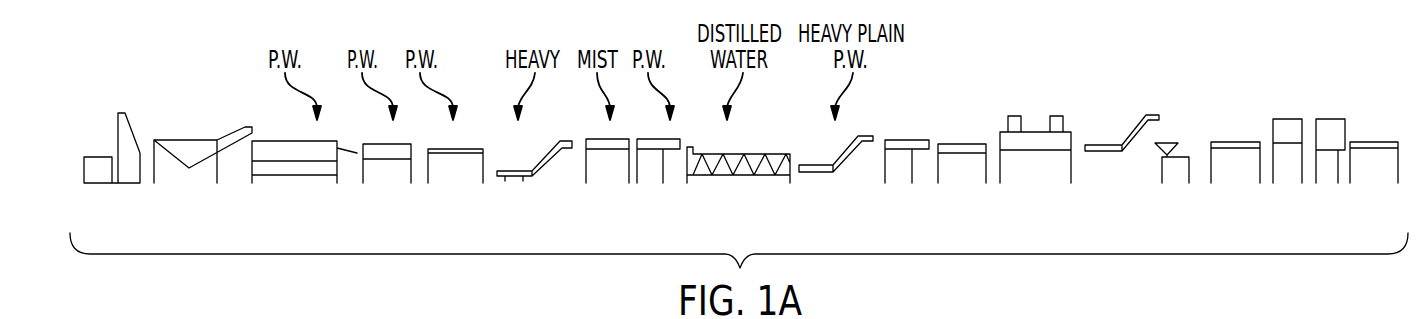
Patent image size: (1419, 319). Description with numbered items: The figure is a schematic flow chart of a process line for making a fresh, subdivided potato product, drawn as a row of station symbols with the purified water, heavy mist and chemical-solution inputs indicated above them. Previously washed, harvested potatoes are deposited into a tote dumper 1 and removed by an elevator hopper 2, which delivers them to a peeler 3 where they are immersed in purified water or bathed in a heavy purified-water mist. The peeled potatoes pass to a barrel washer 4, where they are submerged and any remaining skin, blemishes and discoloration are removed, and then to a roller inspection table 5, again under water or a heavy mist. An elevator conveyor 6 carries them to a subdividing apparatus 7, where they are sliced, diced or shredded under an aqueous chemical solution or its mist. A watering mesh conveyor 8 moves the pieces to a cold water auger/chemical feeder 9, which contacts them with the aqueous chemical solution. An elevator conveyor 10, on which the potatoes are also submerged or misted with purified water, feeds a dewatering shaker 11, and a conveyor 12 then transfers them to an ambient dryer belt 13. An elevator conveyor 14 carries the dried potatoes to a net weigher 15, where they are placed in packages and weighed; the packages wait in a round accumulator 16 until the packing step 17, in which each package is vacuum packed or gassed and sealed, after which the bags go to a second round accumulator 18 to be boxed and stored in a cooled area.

The tote dumper 1 is at (125, 183).
The elevator hopper 2 is at (215, 175).
The peeler 3 is at (293, 175).
The barrel washer 4 is at (410, 177).
The roller inspection table 5 is at (483, 177).
The elevator conveyor 6 is at (515, 178).
The subdividing apparatus 7 is at (628, 177).
The watering mesh conveyor 8 is at (663, 177).
The cold water auger/chemical feeder 9 is at (720, 175).
The elevator conveyor 10 is at (815, 172).
The dewatering shaker 11 is at (912, 177).
The conveyor 12 is at (986, 177).
The ambient dryer belt 13 is at (1071, 177).
The elevator conveyor 14 is at (1105, 151).
The net weigher 15 is at (1189, 177).
The round accumulator 16 is at (1260, 177).
The packing step 17 is at (1338, 177).
The round accumulator 18 is at (1398, 177).